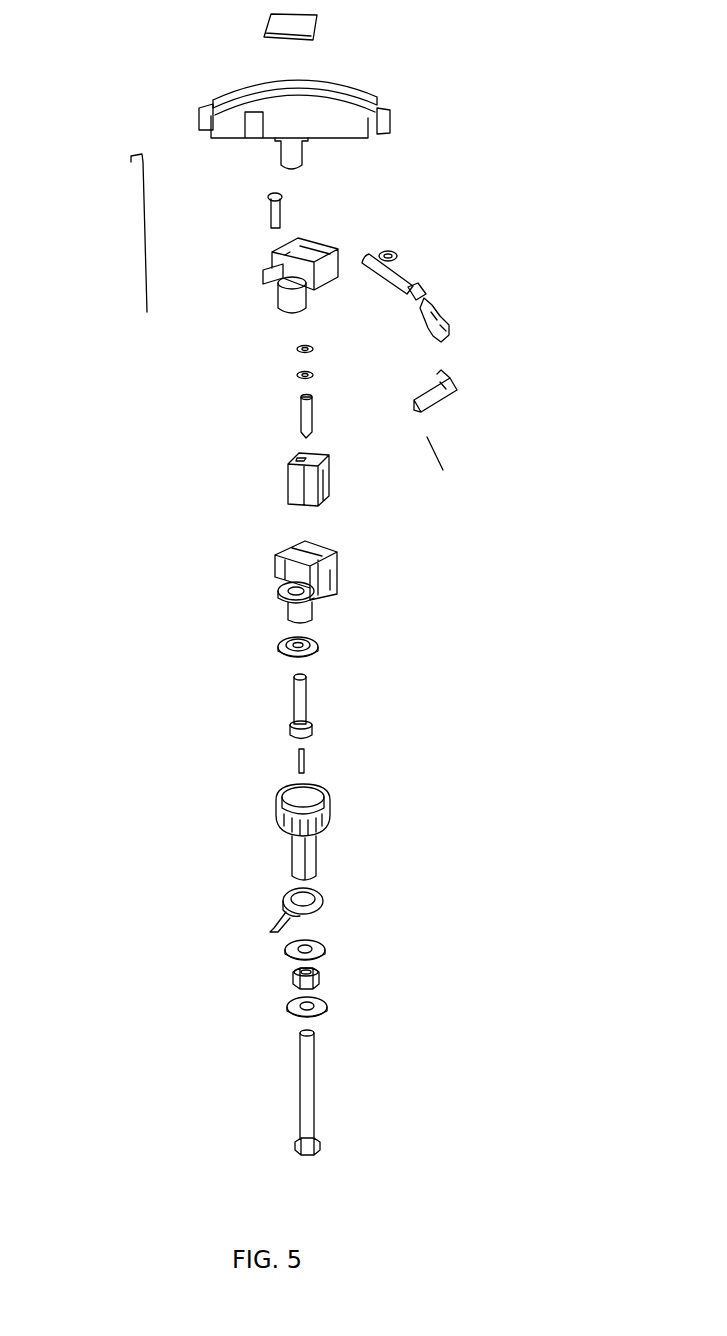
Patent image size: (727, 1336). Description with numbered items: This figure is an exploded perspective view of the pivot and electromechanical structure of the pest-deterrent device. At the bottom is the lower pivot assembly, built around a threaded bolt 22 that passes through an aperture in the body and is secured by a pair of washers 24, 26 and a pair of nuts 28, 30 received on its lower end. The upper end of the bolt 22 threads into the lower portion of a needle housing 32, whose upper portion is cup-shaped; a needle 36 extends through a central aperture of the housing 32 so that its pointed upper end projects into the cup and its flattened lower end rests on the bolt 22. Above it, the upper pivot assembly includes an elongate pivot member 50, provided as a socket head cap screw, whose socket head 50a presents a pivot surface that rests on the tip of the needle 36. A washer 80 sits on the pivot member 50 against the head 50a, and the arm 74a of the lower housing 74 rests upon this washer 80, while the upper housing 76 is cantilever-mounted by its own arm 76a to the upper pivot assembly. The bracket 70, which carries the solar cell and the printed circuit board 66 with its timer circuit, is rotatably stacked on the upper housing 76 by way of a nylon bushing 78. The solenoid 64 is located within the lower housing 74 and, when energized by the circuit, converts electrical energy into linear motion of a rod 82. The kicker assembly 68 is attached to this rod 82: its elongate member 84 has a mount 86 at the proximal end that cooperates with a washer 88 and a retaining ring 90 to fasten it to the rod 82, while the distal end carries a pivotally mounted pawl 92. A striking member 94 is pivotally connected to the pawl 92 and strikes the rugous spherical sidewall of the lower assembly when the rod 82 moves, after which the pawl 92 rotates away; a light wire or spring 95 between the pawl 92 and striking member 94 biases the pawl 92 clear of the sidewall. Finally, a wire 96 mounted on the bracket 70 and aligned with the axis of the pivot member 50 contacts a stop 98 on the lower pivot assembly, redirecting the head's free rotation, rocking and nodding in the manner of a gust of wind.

The threaded bolt 22 is at (363, 1095).
The washer 24 is at (285, 953).
The washer 26 is at (330, 1011).
The nut 28 is at (320, 978).
The nut 30 is at (322, 1146).
The needle housing 32 is at (320, 838).
The needle 36 is at (307, 765).
The pivot member 50 is at (292, 711).
The socket head 50a is at (290, 732).
The solenoid 64 is at (283, 477).
The printed circuit board 66 is at (320, 27).
The kicker assembly 68 is at (445, 276).
The bracket 70 is at (393, 124).
The lower housing 74 is at (261, 593).
The arm 74a is at (278, 568).
The upper housing 76 is at (259, 298).
The arm 76a is at (288, 298).
The nylon bushing 78 is at (285, 213).
The washer 80 is at (322, 648).
The rod 82 is at (298, 413).
The elongate member 84 is at (387, 283).
The mount 86 is at (398, 253).
The washer 88 is at (319, 349).
The retaining ring 90 is at (291, 375).
The pawl 92 is at (452, 318).
The striking member 94 is at (460, 389).
The wire or spring 95 is at (447, 459).
The wire 96 is at (143, 262).
The stop 98 is at (325, 900).